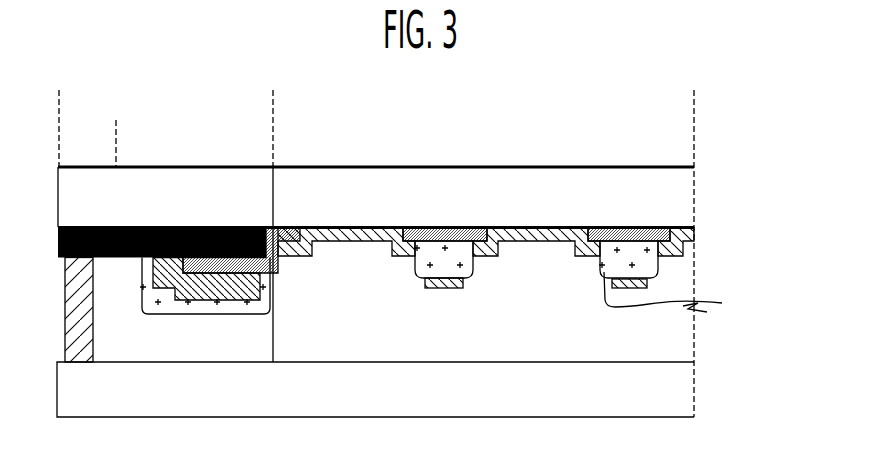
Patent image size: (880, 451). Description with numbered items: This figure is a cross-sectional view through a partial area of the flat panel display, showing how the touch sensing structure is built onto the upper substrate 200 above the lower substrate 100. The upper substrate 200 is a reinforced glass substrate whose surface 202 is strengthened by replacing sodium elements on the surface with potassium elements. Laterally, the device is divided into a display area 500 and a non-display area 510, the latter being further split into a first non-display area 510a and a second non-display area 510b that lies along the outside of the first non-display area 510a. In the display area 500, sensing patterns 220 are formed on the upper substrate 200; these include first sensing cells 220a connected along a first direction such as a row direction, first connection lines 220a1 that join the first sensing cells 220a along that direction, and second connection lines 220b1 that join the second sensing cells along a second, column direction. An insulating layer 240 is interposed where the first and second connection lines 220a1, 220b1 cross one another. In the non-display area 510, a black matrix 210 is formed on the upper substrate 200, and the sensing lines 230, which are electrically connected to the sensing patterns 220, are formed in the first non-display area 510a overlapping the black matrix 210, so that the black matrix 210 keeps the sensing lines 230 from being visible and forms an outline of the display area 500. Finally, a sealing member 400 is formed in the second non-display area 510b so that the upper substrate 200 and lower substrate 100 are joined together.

The lower substrate 100 is at (688, 389).
The upper substrate 200 is at (692, 196).
The surface 202 is at (696, 168).
The black matrix 210 is at (58, 240).
The sensing patterns 220 is at (770, 228).
The first connection lines 220a1 is at (694, 238).
The first sensing cells 220a is at (694, 256).
The second connection lines 220b1 is at (656, 280).
The sensing lines 230 is at (155, 273).
The insulating layer 240 is at (158, 300).
The sealing member 400 is at (70, 332).
The display area 500 is at (694, 128).
The non-display area 510 is at (273, 98).
The first non-display area 510a is at (273, 128).
The second non-display area 510b is at (116, 128).